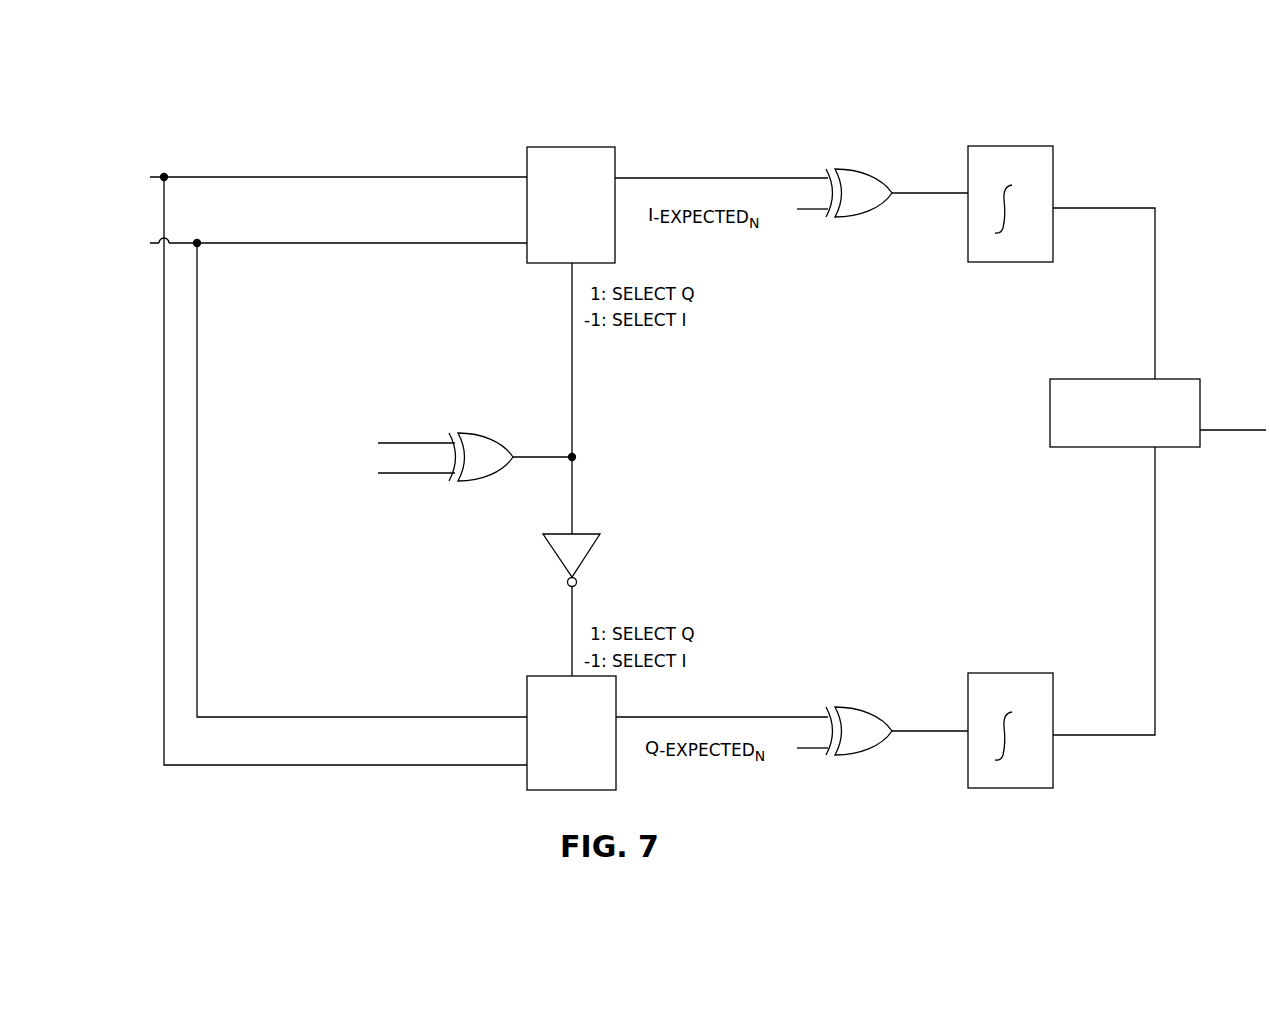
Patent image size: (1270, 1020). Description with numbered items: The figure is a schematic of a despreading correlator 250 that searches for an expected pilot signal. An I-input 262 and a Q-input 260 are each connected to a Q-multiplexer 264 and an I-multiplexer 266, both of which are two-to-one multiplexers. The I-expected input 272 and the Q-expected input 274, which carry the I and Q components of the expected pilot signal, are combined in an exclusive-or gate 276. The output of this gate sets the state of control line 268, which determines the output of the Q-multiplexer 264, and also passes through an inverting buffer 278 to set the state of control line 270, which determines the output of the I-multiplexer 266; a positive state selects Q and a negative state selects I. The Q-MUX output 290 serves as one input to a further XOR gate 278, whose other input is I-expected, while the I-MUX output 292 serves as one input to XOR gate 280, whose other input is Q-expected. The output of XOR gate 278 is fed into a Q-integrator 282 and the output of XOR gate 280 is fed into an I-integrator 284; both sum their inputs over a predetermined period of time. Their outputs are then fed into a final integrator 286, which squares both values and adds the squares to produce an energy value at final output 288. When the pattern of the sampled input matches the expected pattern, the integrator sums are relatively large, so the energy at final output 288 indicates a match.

The despreading correlator 250 is at (212, 818).
The Q-input 260 is at (150, 245).
The I-input 262 is at (152, 176).
The Q-multiplexer 264 is at (560, 147).
The I-multiplexer 266 is at (560, 676).
The control line 268 is at (572, 338).
The control line 270 is at (572, 612).
The I-expected input 272 is at (445, 443).
The Q-expected input 274 is at (445, 473).
The exclusive-or gate 276 is at (490, 433).
The inverting buffer / XOR gate 278 is at (860, 170).
The XOR gate 280 is at (865, 708).
The Q-integrator 282 is at (998, 146).
The I-integrator 284 is at (998, 673).
The final integrator 286 is at (1170, 379).
The final output 288 is at (1210, 432).
The Q-MUX output 290 is at (695, 177).
The I-MUX output 292 is at (725, 717).